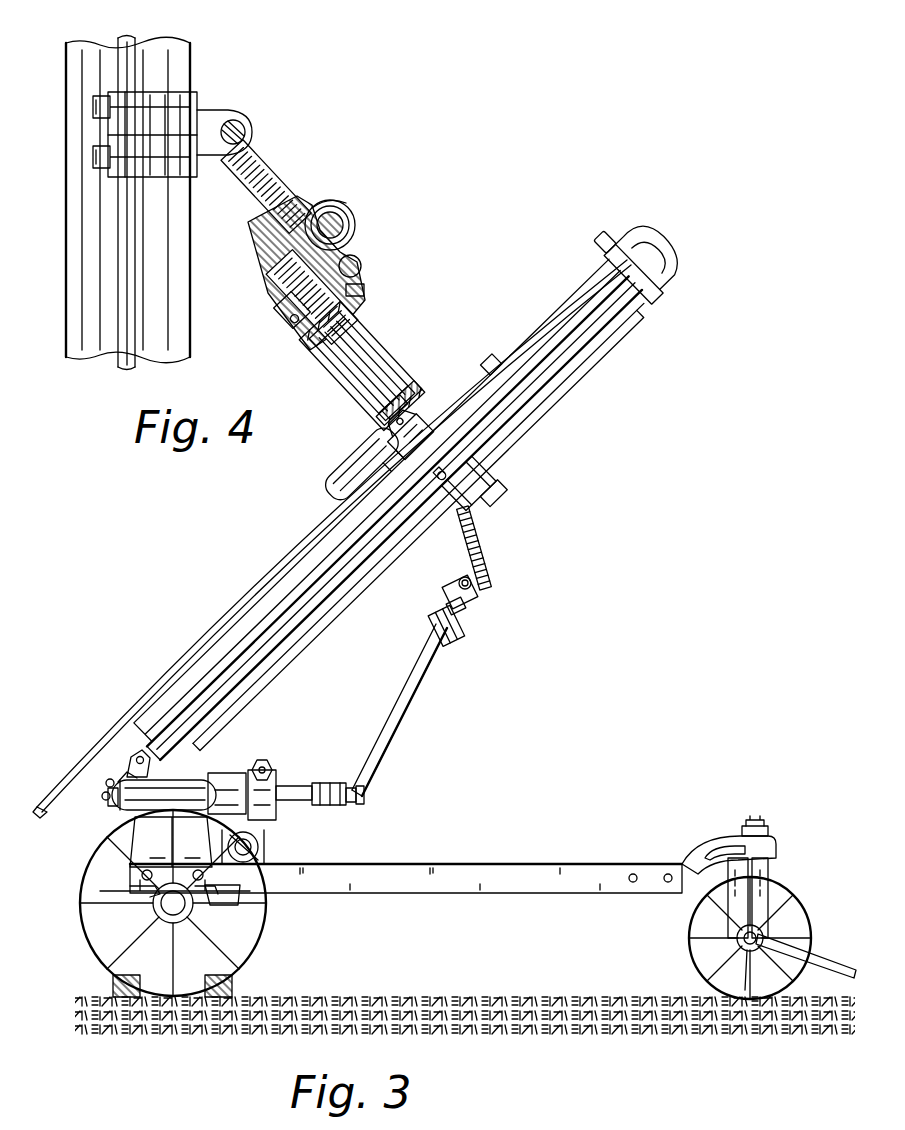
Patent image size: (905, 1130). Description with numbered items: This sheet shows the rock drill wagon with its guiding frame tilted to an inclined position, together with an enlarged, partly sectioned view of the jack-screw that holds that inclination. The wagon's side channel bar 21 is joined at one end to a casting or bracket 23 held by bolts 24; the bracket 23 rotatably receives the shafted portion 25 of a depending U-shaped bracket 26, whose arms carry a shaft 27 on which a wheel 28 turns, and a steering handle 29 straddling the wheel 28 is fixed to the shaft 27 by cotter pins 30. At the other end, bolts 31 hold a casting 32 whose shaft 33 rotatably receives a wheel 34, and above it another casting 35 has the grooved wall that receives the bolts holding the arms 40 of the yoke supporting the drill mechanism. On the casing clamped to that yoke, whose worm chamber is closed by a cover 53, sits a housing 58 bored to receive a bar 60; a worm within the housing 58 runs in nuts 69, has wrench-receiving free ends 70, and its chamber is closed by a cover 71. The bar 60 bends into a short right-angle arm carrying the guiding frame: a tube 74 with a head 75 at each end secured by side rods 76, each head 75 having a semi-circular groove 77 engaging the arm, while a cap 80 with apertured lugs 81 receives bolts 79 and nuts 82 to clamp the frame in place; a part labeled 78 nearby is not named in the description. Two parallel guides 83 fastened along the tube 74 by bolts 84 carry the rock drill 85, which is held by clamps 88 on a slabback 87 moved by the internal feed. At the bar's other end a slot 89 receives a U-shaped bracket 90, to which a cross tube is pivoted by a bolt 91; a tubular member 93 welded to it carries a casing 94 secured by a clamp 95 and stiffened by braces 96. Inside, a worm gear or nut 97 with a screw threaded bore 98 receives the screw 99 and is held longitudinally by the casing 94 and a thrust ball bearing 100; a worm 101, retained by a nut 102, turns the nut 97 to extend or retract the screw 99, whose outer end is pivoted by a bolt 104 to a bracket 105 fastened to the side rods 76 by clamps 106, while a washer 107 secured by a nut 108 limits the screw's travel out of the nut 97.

In FIG. 3, the side channel bar 21 is at (522, 864).
In FIG. 3, the casting or bracket 23 is at (700, 836).
In FIG. 3, the bolts 24 is at (668, 874).
In FIG. 3, the shafted portion 25 is at (755, 820).
In FIG. 3, the U-shaped bracket 26 is at (768, 870).
In FIG. 3, the shaft 27 is at (738, 940).
In FIG. 3, the wheel 28 is at (805, 915).
In FIG. 3, the steering handle 29 is at (835, 968).
In FIG. 3, the cotter pins 30 is at (748, 950).
In FIG. 3, the bolts 31 is at (128, 893).
In FIG. 3, the casting 32 is at (163, 912).
In FIG. 3, the shaft 33 is at (185, 915).
In FIG. 3, the wheel 34 is at (80, 893).
In FIG. 3, the casting 35 is at (171, 842).
In FIG. 3, the arm 40 is at (224, 890).
In FIG. 3, the cover 53 is at (262, 852).
In FIG. 3, the housing 58 is at (238, 760).
In FIG. 3, the bar 60 is at (188, 780).
In FIG. 3, the nut 69 is at (264, 760).
In FIG. 3, the free end 70 is at (274, 768).
In FIG. 3, the cover 71 is at (270, 812).
In FIG. 4, the tube 74 is at (178, 48).
In FIG. 3, the tube 74 is at (528, 427).
In FIG. 3, the head 75 is at (662, 258).
In FIG. 4, the side rods 76 is at (128, 272).
In FIG. 3, the side rods 76 is at (570, 362).
In FIG. 3, the semi-circular groove 77 is at (141, 757).
In FIG. 3, the rod end 78 is at (92, 762).
In FIG. 3, the bolts 79 is at (125, 772).
In FIG. 3, the cap 80 is at (113, 806).
In FIG. 3, the apertured lugs 81 is at (108, 784).
In FIG. 3, the nuts 82 is at (103, 799).
In FIG. 3, the parallel guides 83 is at (552, 348).
In FIG. 3, the bolts 84 is at (385, 517).
In FIG. 3, the rock drill 85 is at (348, 481).
In FIG. 3, the support or slabback 87 is at (506, 380).
In FIG. 3, the clamps 88 is at (456, 426).
In FIG. 3, the slot 89 is at (330, 768).
In FIG. 3, the U-shaped bracket 90 is at (338, 806).
In FIG. 3, the bolt 91 is at (356, 806).
In FIG. 4, the tubular member 93 is at (374, 328).
In FIG. 3, the tubular member 93 is at (447, 640).
In FIG. 4, the casing 94 is at (330, 203).
In FIG. 3, the casing 94 is at (474, 598).
In FIG. 4, the clamp 95 is at (360, 264).
In FIG. 3, the clamp 95 is at (466, 610).
In FIG. 3, the brace 96 is at (390, 746).
In FIG. 4, the worm gear or nut 97 is at (300, 208).
In FIG. 4, the screw threaded bore 98 is at (280, 308).
In FIG. 4, the screw 99 is at (262, 178).
In FIG. 3, the screw 99 is at (482, 538).
In FIG. 4, the thrust ball bearing 100 is at (365, 288).
In FIG. 4, the worm 101 is at (344, 220).
In FIG. 3, the nut 102 is at (472, 580).
In FIG. 4, the bolt 104 is at (243, 130).
In FIG. 3, the bolt 104 is at (492, 506).
In FIG. 4, the bracket 105 is at (186, 106).
In FIG. 3, the bracket 105 is at (482, 486).
In FIG. 4, the clamps 106 is at (110, 128).
In FIG. 3, the clamps 106 is at (456, 484).
In FIG. 4, the washer 107 is at (403, 383).
In FIG. 4, the nut 108 is at (380, 416).